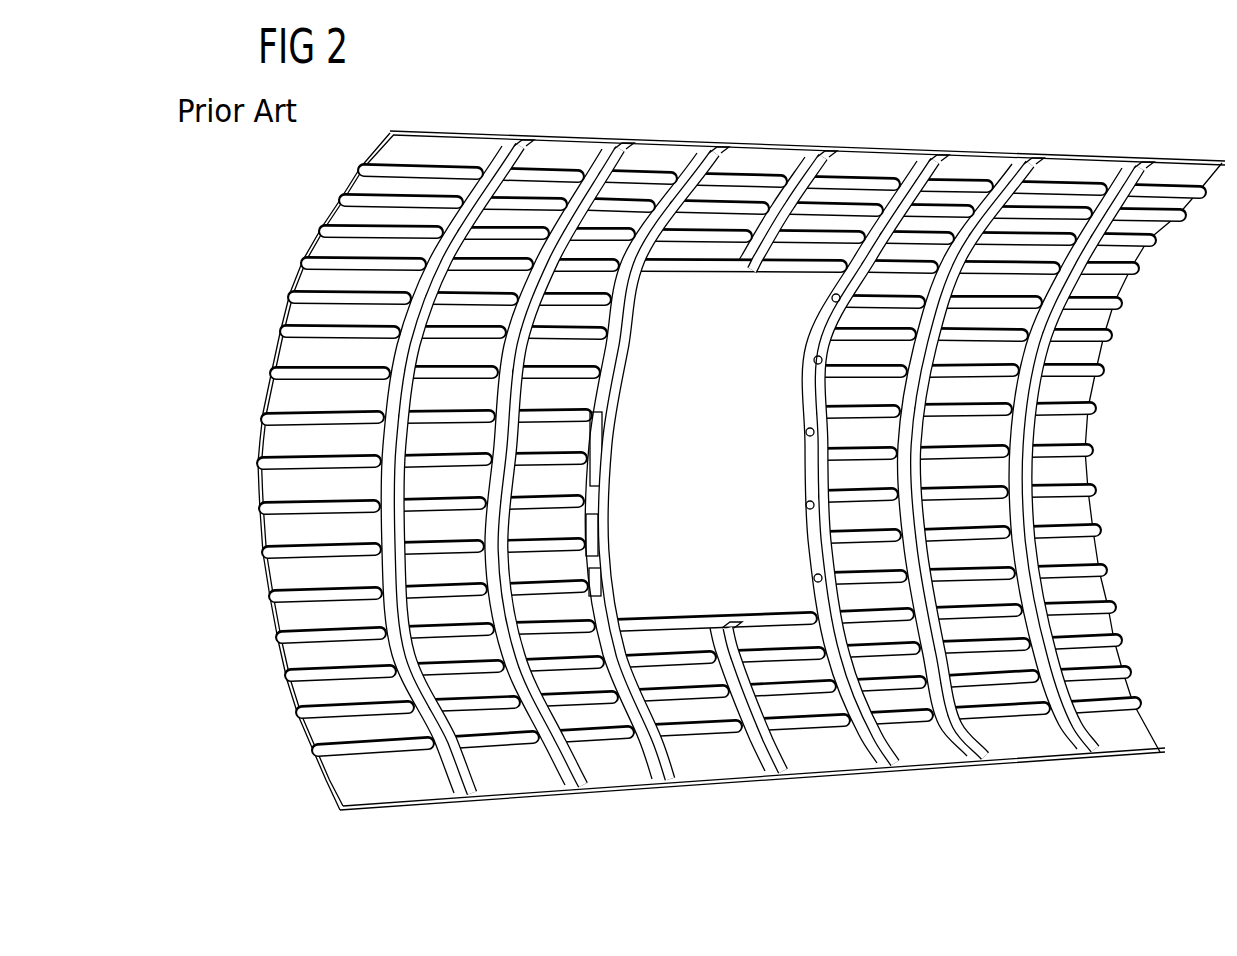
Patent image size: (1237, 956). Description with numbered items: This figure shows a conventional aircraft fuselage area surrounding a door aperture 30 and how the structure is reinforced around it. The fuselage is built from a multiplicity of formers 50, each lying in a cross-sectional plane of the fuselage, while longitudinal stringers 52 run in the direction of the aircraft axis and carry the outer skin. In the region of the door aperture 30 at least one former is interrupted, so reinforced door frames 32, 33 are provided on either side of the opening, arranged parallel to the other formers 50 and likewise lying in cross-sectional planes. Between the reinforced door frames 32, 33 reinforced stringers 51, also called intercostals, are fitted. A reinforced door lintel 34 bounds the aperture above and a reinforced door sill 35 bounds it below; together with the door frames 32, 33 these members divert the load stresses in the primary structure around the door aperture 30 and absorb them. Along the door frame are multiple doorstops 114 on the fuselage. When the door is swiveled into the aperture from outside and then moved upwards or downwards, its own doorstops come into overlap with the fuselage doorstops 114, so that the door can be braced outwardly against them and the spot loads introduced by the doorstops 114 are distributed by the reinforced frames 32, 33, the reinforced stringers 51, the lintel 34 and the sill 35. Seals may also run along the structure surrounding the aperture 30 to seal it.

The door aperture 30 is at (672, 300).
The reinforced door frame 32 is at (592, 780).
The reinforced door frame 33 is at (905, 758).
The reinforced door lintel 34 is at (840, 262).
The reinforced door sill 35 is at (740, 626).
The former 50 is at (482, 778).
The reinforced stringer 51 is at (597, 577).
The stringer 52 is at (1102, 490).
The doorstop 114 is at (814, 360).